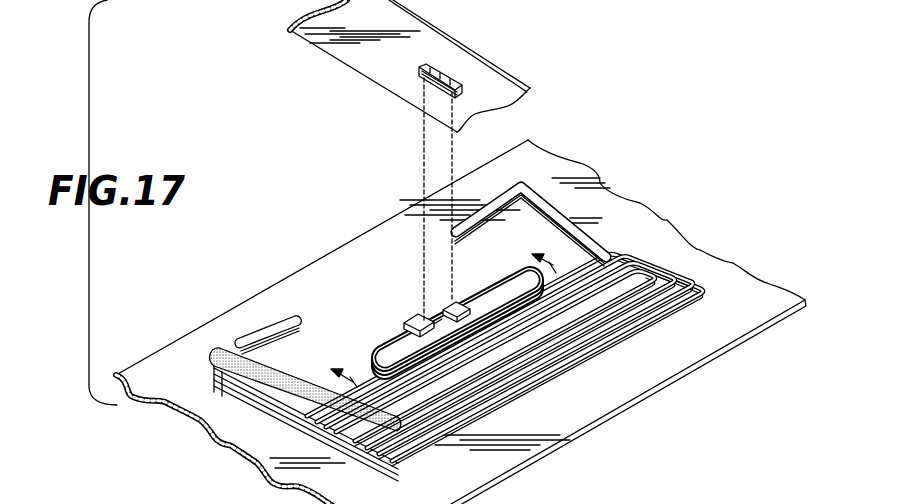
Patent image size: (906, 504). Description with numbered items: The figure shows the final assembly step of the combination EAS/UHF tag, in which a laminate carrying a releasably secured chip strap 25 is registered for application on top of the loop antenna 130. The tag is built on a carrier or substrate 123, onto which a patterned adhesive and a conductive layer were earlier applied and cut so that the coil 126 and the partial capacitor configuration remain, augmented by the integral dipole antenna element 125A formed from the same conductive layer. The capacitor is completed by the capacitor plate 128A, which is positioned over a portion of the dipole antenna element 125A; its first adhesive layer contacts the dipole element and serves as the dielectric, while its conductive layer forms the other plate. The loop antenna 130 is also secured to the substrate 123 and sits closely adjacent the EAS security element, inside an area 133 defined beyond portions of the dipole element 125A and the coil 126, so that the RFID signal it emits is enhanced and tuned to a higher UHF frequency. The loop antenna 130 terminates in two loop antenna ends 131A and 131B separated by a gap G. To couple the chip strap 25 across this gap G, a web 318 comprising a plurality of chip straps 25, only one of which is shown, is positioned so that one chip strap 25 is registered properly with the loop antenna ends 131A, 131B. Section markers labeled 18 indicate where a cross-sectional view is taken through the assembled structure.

The substrate 123 is at (717, 355).
The coil 126 is at (667, 275).
The area 133 is at (575, 258).
The loop antenna 130 is at (365, 362).
The loop antenna end 131A is at (415, 322).
The loop antenna end 131B is at (456, 301).
The gap G is at (439, 310).
The capacitor plate 128A is at (240, 384).
The dipole antenna element 125A is at (275, 330).
The section line 18 is at (428, 310).
The web 318 is at (507, 72).
The chip strap 25 is at (406, 72).